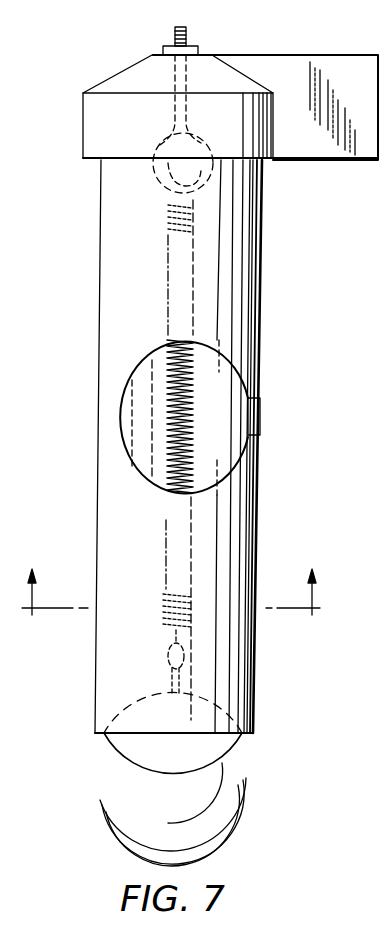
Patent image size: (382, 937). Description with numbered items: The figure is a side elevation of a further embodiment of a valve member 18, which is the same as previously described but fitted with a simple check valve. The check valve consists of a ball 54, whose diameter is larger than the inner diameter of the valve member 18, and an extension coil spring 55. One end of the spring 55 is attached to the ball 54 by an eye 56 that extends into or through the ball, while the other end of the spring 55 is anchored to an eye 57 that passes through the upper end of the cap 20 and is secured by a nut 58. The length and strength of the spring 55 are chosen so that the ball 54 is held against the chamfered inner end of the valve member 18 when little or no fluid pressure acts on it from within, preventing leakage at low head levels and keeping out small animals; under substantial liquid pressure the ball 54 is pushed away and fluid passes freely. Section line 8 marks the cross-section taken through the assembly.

The valve member 18 is at (262, 278).
The cap 20 is at (83, 135).
The ball 54 is at (98, 788).
The extension coil spring 55 is at (170, 392).
The eye 56 is at (168, 655).
The eye 57 is at (157, 183).
The nut 58 is at (188, 46).
The section line 8- 8 is at (171, 579).